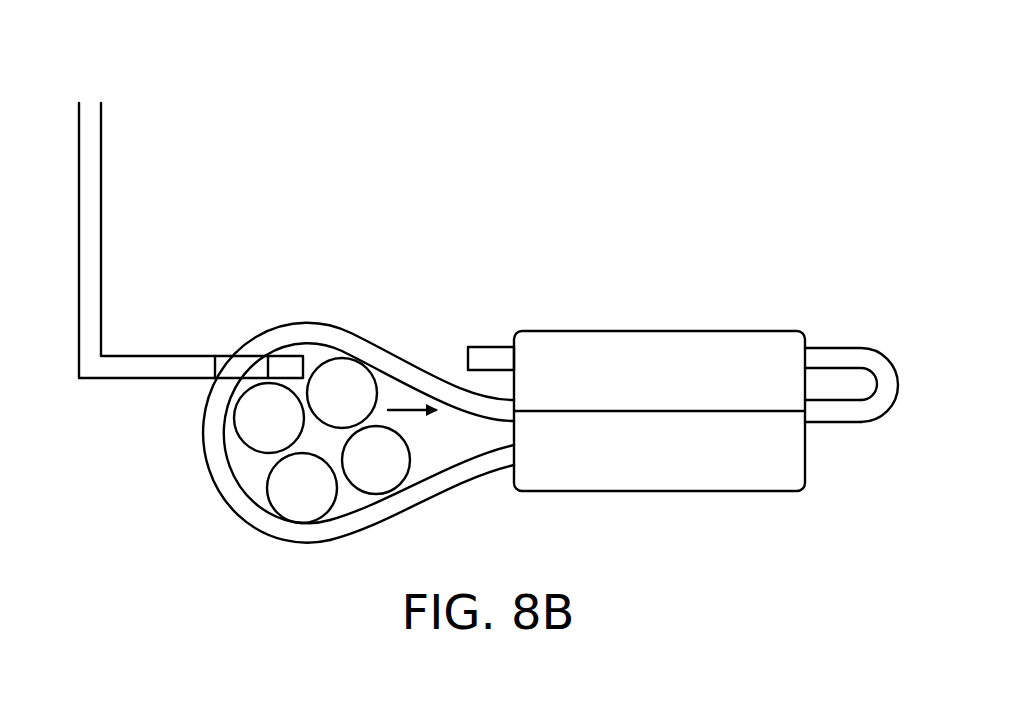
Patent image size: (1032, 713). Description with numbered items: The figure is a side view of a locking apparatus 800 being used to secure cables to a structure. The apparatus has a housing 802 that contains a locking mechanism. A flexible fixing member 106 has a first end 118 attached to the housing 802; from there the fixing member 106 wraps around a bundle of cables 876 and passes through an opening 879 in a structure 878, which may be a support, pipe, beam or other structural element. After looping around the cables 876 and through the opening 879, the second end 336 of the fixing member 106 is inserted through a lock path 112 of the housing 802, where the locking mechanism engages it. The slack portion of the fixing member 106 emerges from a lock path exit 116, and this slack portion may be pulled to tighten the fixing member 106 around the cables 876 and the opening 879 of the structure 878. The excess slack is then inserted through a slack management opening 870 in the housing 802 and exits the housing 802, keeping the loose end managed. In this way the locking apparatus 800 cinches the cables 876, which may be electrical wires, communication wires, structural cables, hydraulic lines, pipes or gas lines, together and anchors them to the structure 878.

The locking apparatus 800 is at (166, 61).
The structure 878 is at (88, 197).
The opening 879 is at (230, 360).
The cables 876 is at (302, 493).
The lock path 112 is at (418, 429).
The second end 336 is at (487, 355).
The slack management opening 870 is at (696, 323).
The housing 802 is at (673, 457).
The fixing member 106 is at (868, 358).
The lock path exit 116 is at (807, 422).
The first end 118 is at (488, 455).